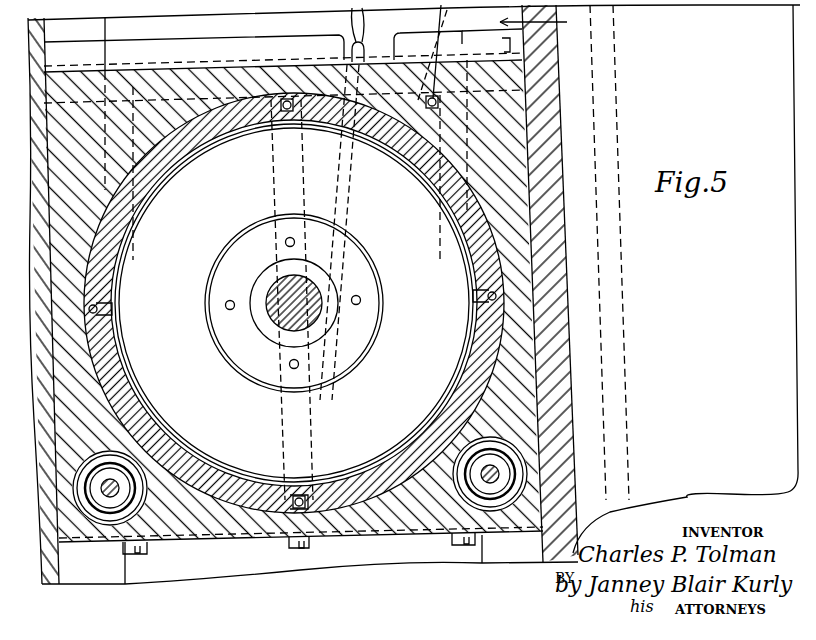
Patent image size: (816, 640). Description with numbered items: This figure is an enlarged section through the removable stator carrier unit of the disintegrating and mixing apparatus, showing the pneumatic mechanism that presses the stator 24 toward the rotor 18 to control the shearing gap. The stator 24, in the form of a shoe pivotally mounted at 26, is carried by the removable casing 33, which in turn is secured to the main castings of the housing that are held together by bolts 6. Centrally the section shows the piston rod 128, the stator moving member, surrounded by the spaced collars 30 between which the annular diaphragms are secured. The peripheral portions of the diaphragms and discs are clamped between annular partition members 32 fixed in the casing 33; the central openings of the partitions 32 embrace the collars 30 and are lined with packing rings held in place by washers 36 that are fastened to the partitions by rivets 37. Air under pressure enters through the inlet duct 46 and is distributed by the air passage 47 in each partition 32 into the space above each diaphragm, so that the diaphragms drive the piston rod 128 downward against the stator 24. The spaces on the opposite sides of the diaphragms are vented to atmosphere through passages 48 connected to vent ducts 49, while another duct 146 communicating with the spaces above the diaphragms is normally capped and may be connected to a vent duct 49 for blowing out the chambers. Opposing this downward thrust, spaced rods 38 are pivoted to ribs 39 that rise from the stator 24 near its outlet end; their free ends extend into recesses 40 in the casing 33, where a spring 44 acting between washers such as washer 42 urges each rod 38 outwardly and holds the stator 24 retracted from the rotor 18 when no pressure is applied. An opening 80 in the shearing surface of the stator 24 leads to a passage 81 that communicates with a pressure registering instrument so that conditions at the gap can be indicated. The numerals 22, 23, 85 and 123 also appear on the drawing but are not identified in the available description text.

The bolts 6 is at (362, 60).
The rotor 18 is at (338, 553).
The cover plate 22 is at (92, 30).
The cover portion 23 is at (119, 7).
The stator 24 is at (424, 15).
The pivot mounting 26 is at (496, 40).
The collars 30 is at (326, 322).
The annular partition members 32 is at (515, 248).
The casing 33 is at (510, 153).
The washers 36 is at (346, 343).
The rivets 37 is at (290, 237).
The spaced rods 38 is at (147, 470).
The ribs 39 is at (272, 167).
The recesses 40 is at (105, 525).
The washer 42 is at (115, 482).
The spring 44 is at (142, 503).
The inlet duct 46 is at (280, 97).
The air passage 47 is at (357, 302).
The passages 48 is at (115, 303).
The vent ducts 49 is at (108, 309).
The opening 80 is at (371, 250).
The passage 81 is at (355, 225).
The passage 85 is at (408, 50).
The cover element 123 is at (68, 7).
The piston rod 128 is at (318, 291).
The duct 146 is at (292, 498).